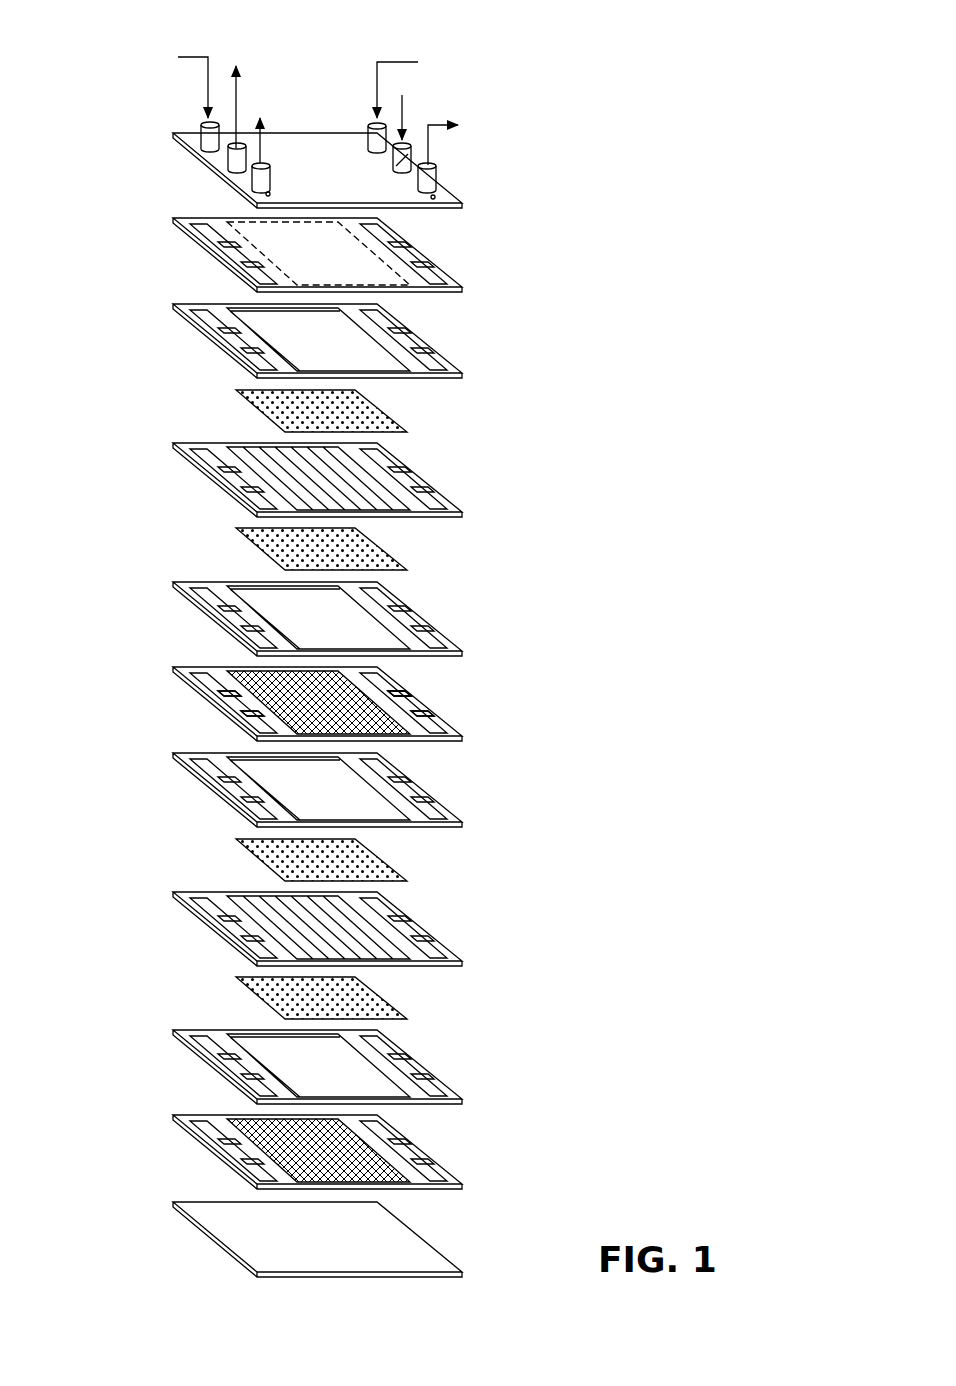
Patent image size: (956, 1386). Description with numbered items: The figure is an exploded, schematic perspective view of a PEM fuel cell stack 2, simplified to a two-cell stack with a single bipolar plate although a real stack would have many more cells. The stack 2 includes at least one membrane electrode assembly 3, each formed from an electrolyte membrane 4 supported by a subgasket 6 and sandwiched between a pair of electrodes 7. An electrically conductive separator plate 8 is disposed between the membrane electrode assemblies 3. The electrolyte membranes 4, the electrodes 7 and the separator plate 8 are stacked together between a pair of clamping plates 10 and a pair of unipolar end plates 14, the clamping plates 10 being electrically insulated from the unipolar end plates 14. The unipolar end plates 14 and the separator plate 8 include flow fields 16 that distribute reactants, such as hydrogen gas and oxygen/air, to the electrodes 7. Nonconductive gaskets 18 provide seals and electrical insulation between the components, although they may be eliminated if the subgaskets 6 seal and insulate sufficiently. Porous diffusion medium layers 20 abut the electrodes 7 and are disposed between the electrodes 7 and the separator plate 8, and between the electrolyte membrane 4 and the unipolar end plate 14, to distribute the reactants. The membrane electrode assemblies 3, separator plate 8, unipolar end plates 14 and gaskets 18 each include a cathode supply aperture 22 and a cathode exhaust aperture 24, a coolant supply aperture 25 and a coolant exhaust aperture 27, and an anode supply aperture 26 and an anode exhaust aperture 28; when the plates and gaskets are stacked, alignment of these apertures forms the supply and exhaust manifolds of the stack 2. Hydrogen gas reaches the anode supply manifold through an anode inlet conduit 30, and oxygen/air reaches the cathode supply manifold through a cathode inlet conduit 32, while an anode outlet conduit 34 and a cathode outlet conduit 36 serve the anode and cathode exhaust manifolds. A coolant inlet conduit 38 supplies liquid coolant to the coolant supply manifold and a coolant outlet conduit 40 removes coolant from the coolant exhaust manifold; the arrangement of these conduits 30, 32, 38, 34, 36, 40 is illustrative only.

The fuel cell stack 2 is at (492, 67).
The membrane electrode assembly 3 is at (312, 698).
The electrolyte membrane 4 is at (312, 698).
The subgasket 6 is at (388, 480).
The electrodes 7 is at (364, 478).
The separator plate 8 is at (304, 711).
The clamping plates 10 is at (195, 168).
The unipolar end plates 14 is at (195, 250).
The flow fields 16 is at (405, 295).
The gaskets 18 is at (226, 311).
The diffusion medium layers 20 is at (268, 408).
The cathode supply aperture 22 is at (210, 686).
The cathode exhaust aperture 24 is at (413, 718).
The coolant supply aperture 25 is at (384, 698).
The anode supply aperture 26 is at (376, 673).
The coolant exhaust aperture 27 is at (218, 701).
The anode exhaust aperture 28 is at (254, 736).
The anode inlet conduit 30 is at (376, 135).
The cathode inlet conduit 32 is at (208, 135).
The anode outlet conduit 34 is at (262, 182).
The cathode outlet conduit 36 is at (428, 183).
The coolant inlet conduit 38 is at (408, 150).
The coolant outlet conduit 40 is at (236, 160).